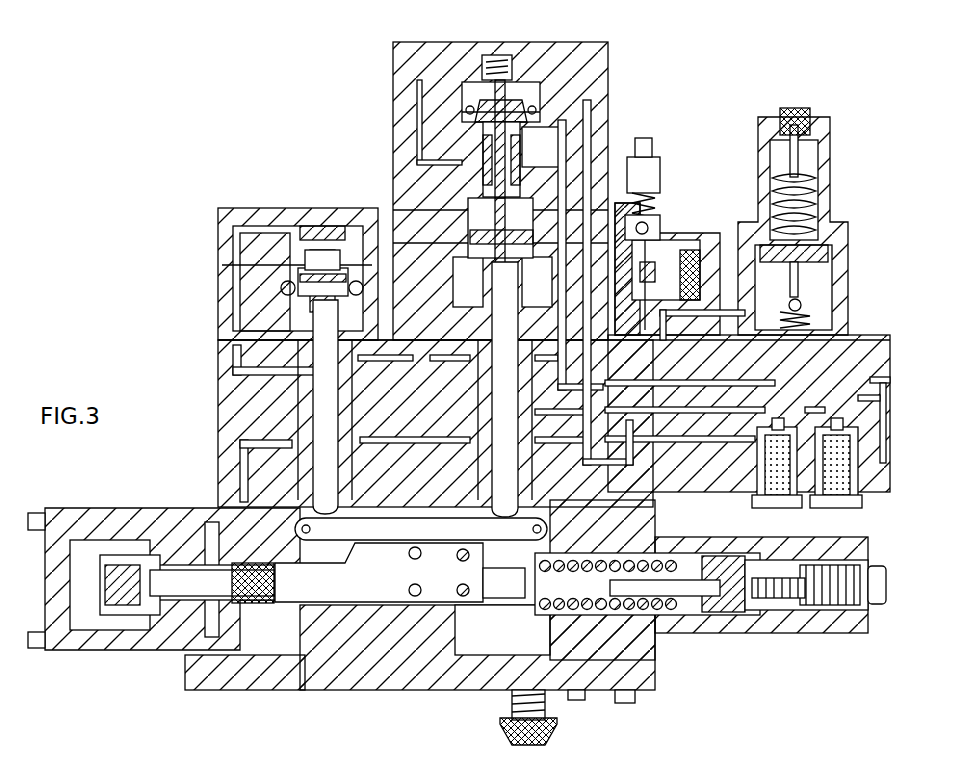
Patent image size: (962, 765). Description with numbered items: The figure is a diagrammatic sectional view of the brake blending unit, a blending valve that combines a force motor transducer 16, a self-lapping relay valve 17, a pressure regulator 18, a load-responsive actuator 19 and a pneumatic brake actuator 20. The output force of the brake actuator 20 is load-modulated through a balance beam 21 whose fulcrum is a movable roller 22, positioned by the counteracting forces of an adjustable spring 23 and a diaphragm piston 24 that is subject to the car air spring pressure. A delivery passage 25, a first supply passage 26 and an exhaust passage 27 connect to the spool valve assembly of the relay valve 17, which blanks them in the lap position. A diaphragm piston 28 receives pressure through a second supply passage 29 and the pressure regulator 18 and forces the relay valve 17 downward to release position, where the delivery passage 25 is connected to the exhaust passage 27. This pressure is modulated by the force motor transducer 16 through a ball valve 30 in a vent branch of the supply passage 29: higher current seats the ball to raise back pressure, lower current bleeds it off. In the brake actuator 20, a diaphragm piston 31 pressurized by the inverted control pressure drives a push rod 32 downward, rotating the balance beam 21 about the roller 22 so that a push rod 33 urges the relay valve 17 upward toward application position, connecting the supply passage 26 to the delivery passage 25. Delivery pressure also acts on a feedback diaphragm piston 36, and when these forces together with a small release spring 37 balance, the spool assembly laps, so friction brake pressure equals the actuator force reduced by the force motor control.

The force motor transducer 16 is at (665, 198).
The self-lapping relay valve 17 is at (392, 145).
The pressure regulator 18 is at (832, 190).
The load-responsive actuator 19 is at (160, 502).
The pneumatic brake actuator 20 is at (277, 202).
The balance beam 21 is at (372, 528).
The movable roller 22 is at (418, 542).
The adjustable spring 23 is at (665, 616).
The diaphragm piston 24 is at (128, 612).
The delivery passage 25 is at (455, 170).
The first supply passage 26 is at (552, 140).
The exhaust passage 27 is at (556, 175).
The diaphragm piston 28 is at (490, 250).
The second supply passage 29 is at (740, 320).
The ball valve 30 is at (650, 228).
The diaphragm piston 31 is at (283, 288).
The push rod 32 is at (325, 360).
The push rod 33 is at (500, 450).
The feedback diaphragm piston 36 is at (465, 106).
The release spring 37 is at (499, 55).